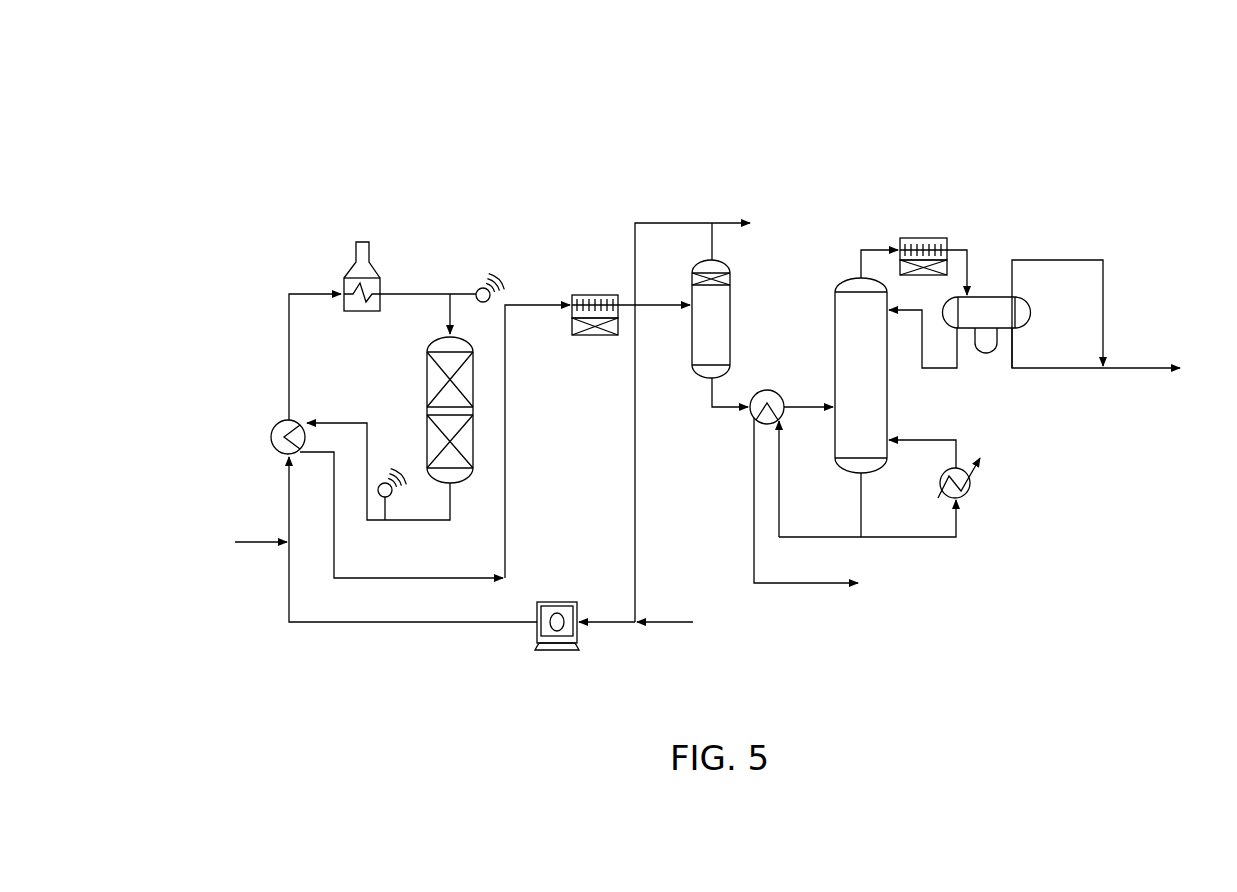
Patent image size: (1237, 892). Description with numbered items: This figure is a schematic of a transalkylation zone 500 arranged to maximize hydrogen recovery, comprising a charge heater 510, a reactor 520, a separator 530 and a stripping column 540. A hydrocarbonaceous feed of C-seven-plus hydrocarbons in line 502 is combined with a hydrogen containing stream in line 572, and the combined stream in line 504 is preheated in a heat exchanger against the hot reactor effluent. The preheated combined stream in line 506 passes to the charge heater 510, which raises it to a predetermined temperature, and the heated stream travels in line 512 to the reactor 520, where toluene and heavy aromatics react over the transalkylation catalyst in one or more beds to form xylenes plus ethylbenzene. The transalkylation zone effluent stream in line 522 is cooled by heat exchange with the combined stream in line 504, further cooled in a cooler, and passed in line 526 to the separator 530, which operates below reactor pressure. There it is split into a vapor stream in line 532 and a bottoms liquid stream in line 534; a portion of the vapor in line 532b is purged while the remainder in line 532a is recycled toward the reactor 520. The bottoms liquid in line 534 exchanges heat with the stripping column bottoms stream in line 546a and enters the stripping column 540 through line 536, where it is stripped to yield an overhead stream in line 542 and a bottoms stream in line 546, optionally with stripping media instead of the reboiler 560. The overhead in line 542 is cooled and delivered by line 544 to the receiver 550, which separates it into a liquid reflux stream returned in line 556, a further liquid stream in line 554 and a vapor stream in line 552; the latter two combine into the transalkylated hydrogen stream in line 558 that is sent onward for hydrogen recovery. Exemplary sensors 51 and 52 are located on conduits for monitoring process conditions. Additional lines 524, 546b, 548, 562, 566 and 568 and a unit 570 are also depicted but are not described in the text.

The transalkylation zone 500 is at (426, 197).
The hydrocarbonaceous feed line 502 is at (248, 545).
The combined stream line 504 is at (287, 468).
The preheated combined stream line 506 is at (290, 371).
The charge heater 510 is at (367, 266).
The sensor 51 is at (471, 294).
The heated feed line 512 is at (448, 300).
The reactor 520 is at (426, 399).
The transalkylation zone effluent stream line 522 is at (366, 424).
The sensor 52 is at (388, 516).
The heat exchanged effluent line 524 is at (446, 576).
The cooled effluent line 526 is at (672, 308).
The separator 530 is at (731, 335).
The vapor stream line 532 is at (715, 235).
The vapor recycle line 532a is at (667, 221).
The purge stream line 532b is at (732, 222).
The bottoms liquid stream line 534 is at (710, 385).
The stripping column feed line 536 is at (802, 406).
The stripping column 540 is at (833, 340).
The stripping column overhead stream line 542 is at (861, 249).
The cooled overhead line 544 is at (963, 258).
The stripping column bottoms stream line 546 is at (862, 523).
The bottoms heat exchange line 546a is at (780, 510).
The bottoms reboiler line 546b is at (933, 539).
The product line 548 is at (840, 587).
The receiver 550 is at (1030, 325).
The vapor stream line 552 is at (1045, 262).
The liquid stream line 554 is at (1022, 370).
The reflux stream line 556 is at (950, 368).
The transalkylated hydrogen stream line 558 is at (1152, 367).
The reboiler 560 is at (970, 492).
The reboiler return line 562 is at (942, 440).
The makeup line 566 is at (663, 624).
The combined recycle line 568 is at (590, 624).
The compressor 570 is at (568, 651).
The hydrogen containing stream line 572 is at (482, 625).